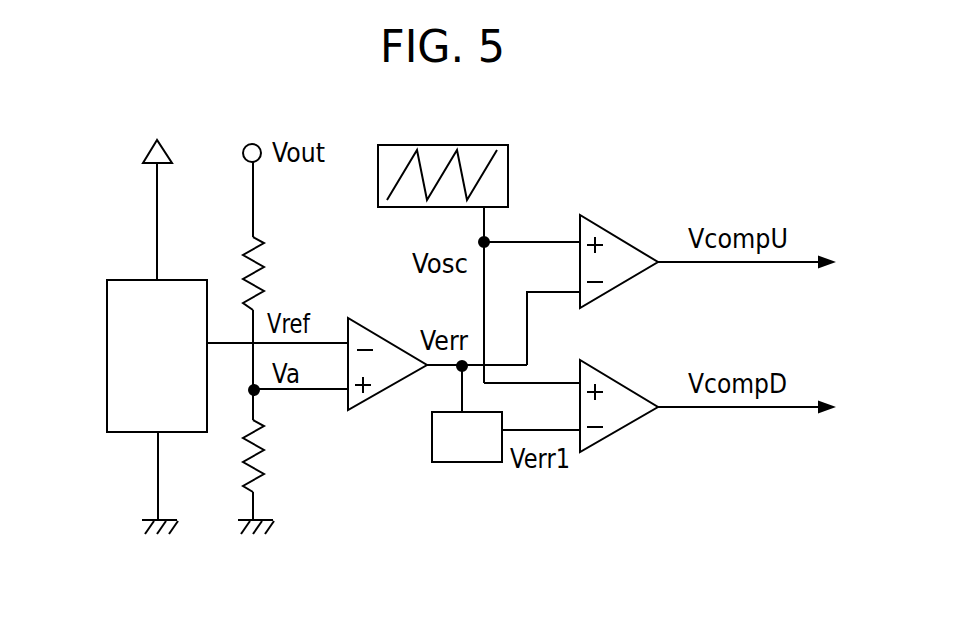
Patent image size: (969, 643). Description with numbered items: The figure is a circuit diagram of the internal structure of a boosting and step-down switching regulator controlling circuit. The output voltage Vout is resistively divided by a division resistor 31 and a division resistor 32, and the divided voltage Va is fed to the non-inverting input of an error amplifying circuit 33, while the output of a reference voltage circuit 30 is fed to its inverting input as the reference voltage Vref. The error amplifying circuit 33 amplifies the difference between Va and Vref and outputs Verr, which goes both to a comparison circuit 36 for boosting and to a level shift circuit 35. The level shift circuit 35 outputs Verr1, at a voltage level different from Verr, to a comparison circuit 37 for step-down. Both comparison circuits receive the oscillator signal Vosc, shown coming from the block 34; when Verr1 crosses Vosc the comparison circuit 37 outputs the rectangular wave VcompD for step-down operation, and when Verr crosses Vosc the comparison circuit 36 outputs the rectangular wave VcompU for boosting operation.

The reference voltage circuit 30 is at (130, 277).
The division resistor 31 is at (272, 272).
The division resistor 32 is at (272, 465).
The error amplifying circuit 33 is at (373, 400).
The oscillator (triangular wave generator) 34 is at (508, 172).
The level shift circuit 35 is at (457, 463).
The comparison circuit for boosting 36 is at (613, 285).
The comparison circuit for step-down 37 is at (615, 430).